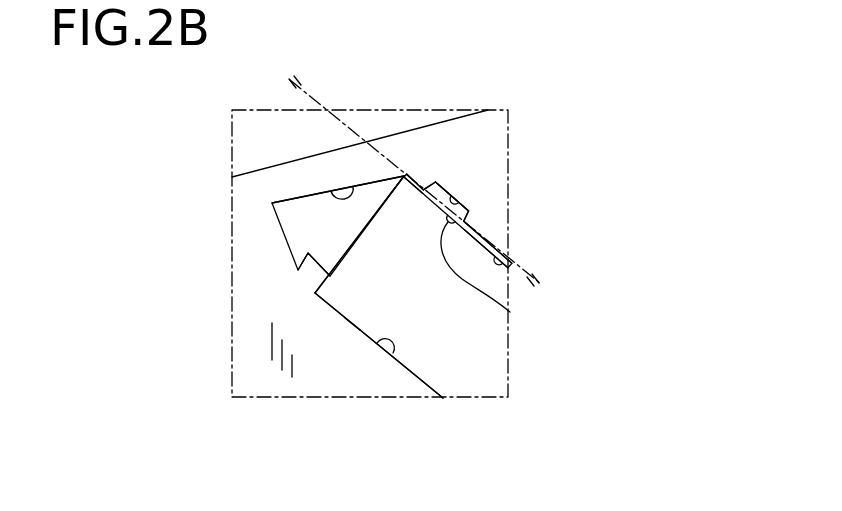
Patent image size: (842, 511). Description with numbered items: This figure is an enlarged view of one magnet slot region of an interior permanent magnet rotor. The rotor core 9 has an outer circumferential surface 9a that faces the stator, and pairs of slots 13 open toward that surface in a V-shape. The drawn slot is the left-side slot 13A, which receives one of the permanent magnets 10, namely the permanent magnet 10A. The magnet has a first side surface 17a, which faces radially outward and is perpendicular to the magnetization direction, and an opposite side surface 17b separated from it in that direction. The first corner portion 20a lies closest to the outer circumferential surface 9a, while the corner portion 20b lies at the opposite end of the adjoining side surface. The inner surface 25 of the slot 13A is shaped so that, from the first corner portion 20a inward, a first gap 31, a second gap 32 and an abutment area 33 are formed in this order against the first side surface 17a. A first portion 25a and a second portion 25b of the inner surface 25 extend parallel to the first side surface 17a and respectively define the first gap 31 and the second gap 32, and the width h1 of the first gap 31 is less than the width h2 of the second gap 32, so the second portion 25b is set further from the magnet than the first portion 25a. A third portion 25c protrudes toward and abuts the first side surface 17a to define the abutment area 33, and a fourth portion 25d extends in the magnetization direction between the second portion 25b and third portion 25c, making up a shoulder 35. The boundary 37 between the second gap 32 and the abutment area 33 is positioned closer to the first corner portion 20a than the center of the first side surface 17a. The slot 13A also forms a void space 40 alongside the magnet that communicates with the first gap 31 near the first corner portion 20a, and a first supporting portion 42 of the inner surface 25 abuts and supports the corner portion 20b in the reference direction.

The rotor core 9 is at (263, 366).
The outer circumferential surface 9a is at (232, 177).
The permanent magnet 10 is at (412, 322).
The permanent magnet 10A is at (430, 363).
The slot 13 is at (374, 373).
The left-side slot 13A is at (368, 347).
The first side surface 17a is at (450, 192).
The side surface 17b is at (352, 325).
The first corner portion 20a is at (404, 173).
The corner portion 20b is at (315, 293).
The inner surface 25 is at (331, 191).
The first portion 25a is at (438, 188).
The second portion 25b is at (466, 211).
The third portion 25c is at (508, 263).
The fourth portion 25d is at (538, 290).
The first gap 31 is at (413, 179).
The second gap 32 is at (460, 197).
The abutment area 33 is at (485, 242).
The shoulder 35 is at (510, 312).
The boundary 37 is at (465, 220).
The void space 40 is at (293, 222).
The first supporting portion 42 is at (313, 273).
The width of the first gap h1 is at (290, 80).
The width of the second gap h2 is at (552, 292).